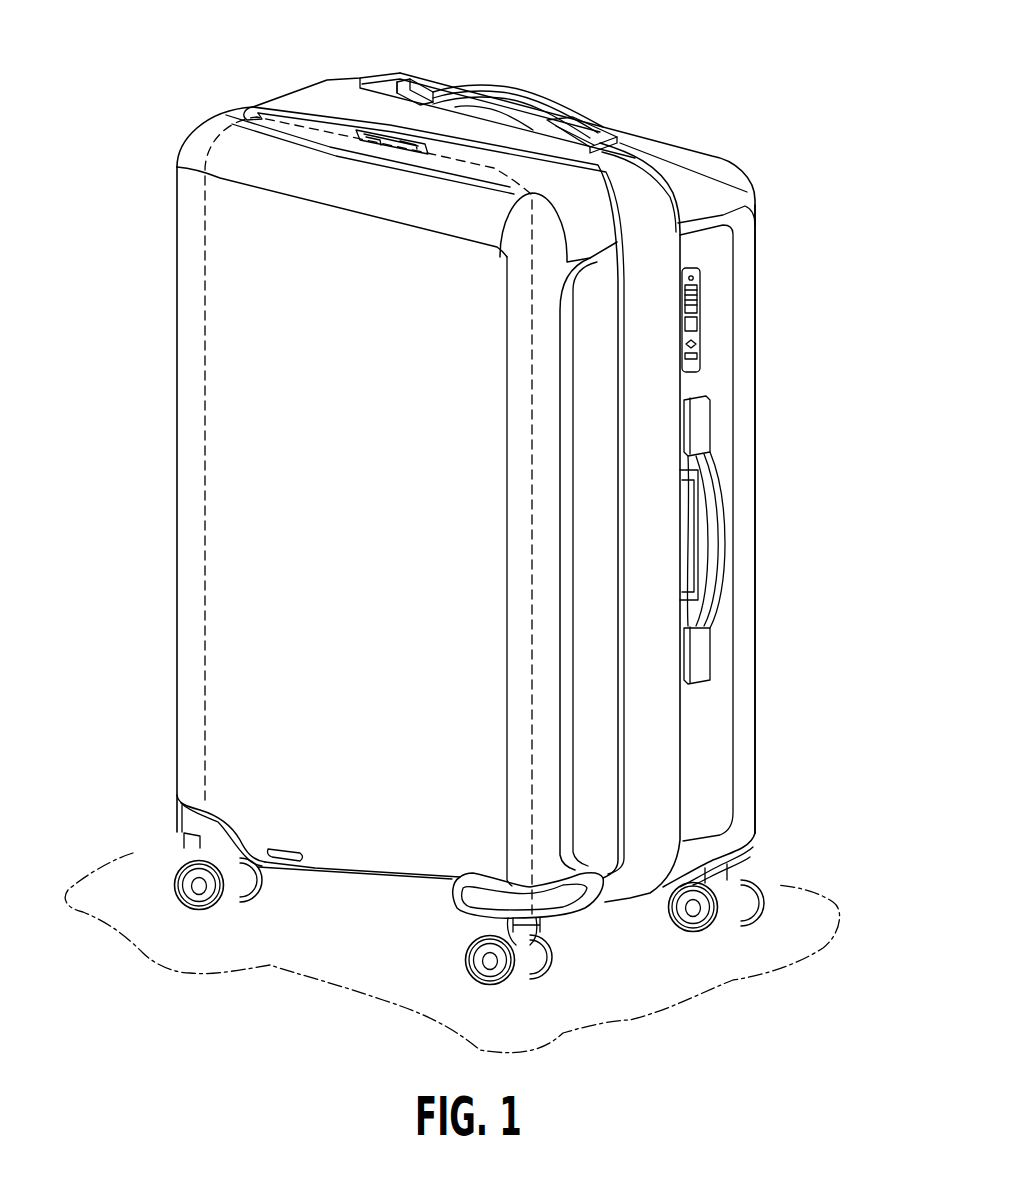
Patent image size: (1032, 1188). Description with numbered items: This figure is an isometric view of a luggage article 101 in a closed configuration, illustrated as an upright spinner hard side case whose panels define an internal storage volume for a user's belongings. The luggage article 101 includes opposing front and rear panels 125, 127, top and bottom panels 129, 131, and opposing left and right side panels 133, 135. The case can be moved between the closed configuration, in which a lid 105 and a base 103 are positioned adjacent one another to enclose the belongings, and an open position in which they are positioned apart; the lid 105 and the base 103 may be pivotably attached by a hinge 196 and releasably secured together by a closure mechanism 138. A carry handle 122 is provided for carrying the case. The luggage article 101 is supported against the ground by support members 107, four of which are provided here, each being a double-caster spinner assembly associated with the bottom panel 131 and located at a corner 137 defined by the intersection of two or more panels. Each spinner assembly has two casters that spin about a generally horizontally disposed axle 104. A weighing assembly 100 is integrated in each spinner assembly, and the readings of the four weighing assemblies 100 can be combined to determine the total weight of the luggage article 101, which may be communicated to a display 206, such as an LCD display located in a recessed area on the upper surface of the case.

The weighing assembly 100 is at (160, 685).
The luggage article 101 is at (780, 232).
The base 103 is at (770, 590).
The axle 104 is at (199, 887).
The lid 105 is at (160, 437).
The support member 107 is at (160, 748).
The carry handle 122 is at (510, 88).
The front panel 125 is at (355, 461).
The rear panel 127 is at (768, 330).
The top panel 129 is at (628, 118).
The bottom panel 131 is at (332, 873).
The left side panel 133 is at (770, 665).
The right side panel 135 is at (170, 507).
The corner 137 is at (163, 858).
The closure mechanism 138 is at (757, 465).
The hinge 196 is at (150, 340).
The display 206 is at (373, 133).